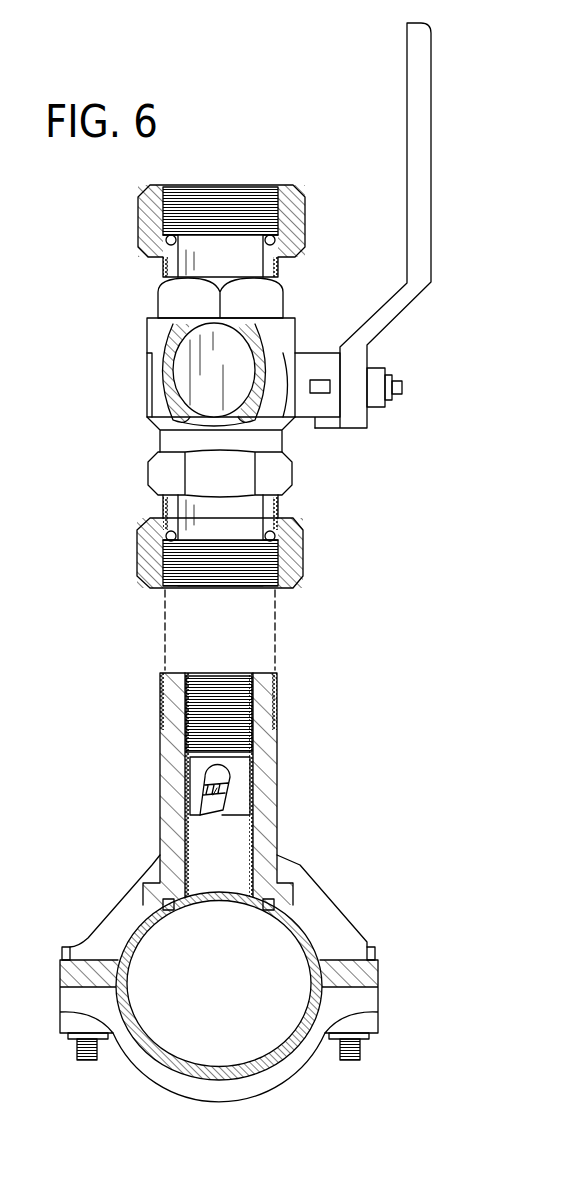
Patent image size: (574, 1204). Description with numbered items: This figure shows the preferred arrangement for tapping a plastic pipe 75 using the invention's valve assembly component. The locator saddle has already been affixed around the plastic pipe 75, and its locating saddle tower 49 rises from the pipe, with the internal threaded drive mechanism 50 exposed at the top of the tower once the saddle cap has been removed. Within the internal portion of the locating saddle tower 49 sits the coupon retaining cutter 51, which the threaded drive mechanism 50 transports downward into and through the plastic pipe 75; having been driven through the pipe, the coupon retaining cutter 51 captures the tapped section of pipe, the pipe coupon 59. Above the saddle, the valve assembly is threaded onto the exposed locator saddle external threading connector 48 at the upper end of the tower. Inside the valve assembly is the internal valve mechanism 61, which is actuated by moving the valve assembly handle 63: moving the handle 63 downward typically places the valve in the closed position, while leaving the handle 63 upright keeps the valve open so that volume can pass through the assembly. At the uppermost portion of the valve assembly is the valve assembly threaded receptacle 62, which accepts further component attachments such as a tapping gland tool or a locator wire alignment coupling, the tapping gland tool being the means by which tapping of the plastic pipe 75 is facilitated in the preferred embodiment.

The locator saddle external threading connector 48 is at (243, 573).
The locating saddle tower 49 is at (165, 618).
The threaded drive mechanism 50 is at (243, 722).
The coupon retaining cutter 51 is at (237, 795).
The pipe coupon 59 is at (213, 795).
The internal valve mechanism 61 is at (240, 367).
The valve assembly threaded receptacle 62 is at (230, 197).
The valve assembly handle 63 is at (417, 137).
The plastic pipe 75 is at (193, 1020).